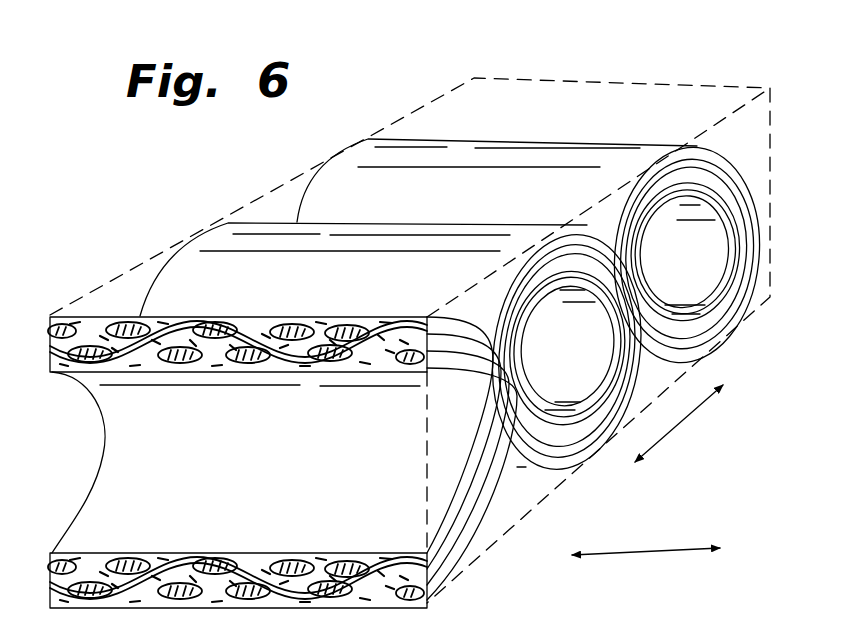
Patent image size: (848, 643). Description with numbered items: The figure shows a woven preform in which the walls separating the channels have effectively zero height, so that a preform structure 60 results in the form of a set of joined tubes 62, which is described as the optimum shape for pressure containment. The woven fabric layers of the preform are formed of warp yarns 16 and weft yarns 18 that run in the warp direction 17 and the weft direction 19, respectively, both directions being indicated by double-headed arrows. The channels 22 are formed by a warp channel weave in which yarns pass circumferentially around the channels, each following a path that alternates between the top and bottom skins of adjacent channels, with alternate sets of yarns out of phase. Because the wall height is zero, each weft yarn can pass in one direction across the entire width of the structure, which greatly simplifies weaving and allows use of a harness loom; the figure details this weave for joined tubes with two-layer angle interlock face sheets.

The preform structure 60 is at (218, 207).
The warp yarn 16 is at (228, 315).
The weft yarn 18 is at (453, 320).
The joined tubes 62 is at (735, 157).
The channel 22 is at (707, 247).
The weft direction 19 is at (700, 414).
The warp direction 17 is at (653, 548).